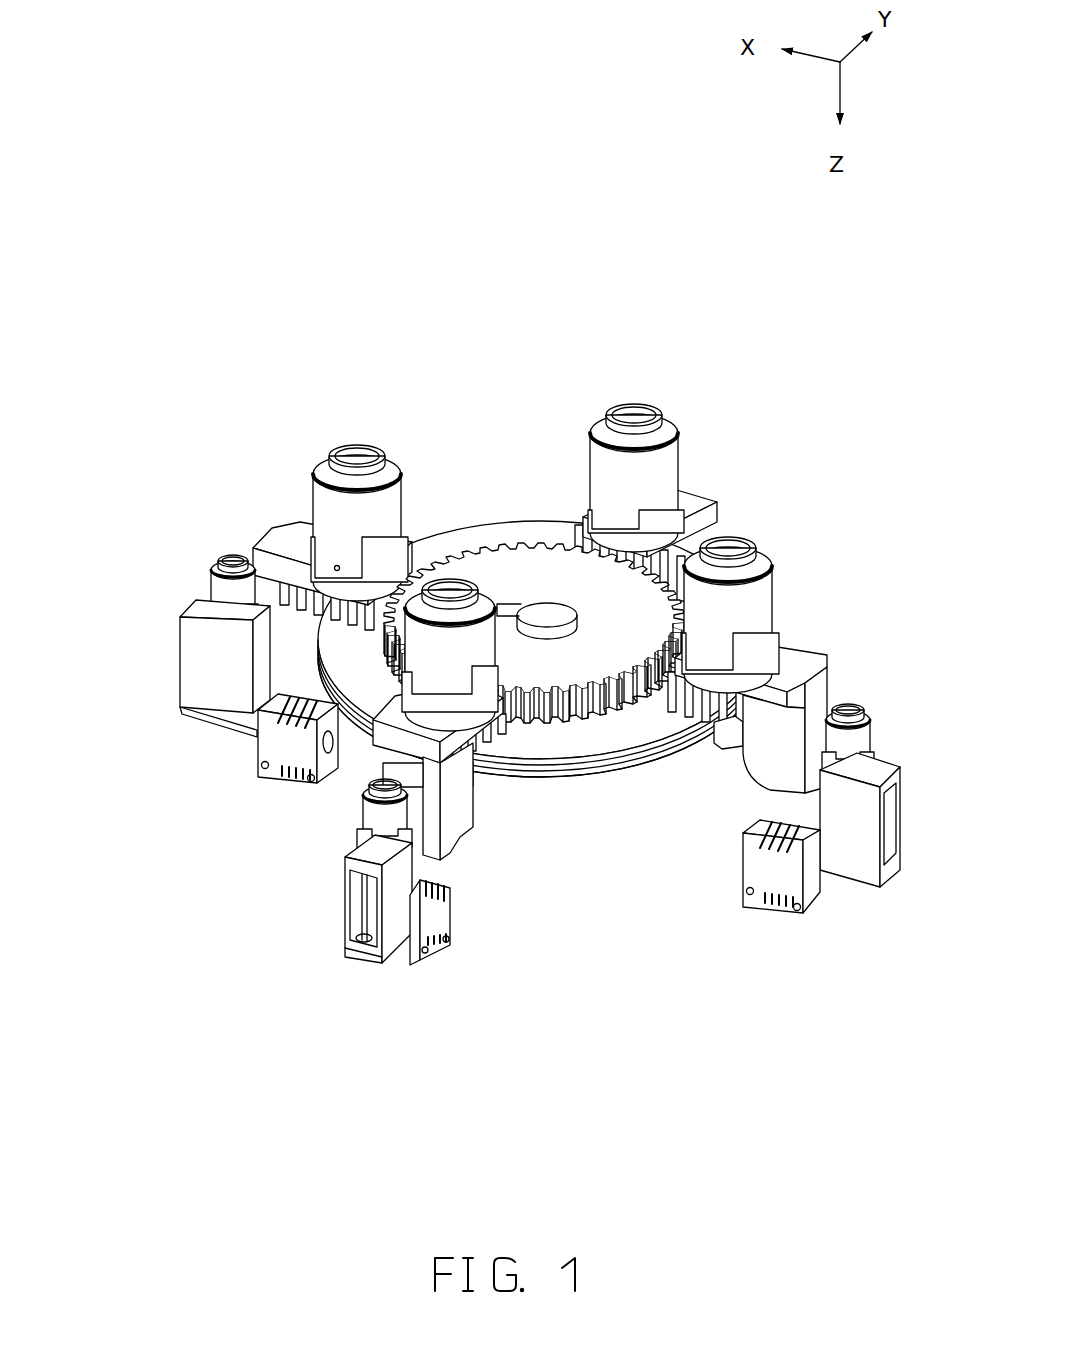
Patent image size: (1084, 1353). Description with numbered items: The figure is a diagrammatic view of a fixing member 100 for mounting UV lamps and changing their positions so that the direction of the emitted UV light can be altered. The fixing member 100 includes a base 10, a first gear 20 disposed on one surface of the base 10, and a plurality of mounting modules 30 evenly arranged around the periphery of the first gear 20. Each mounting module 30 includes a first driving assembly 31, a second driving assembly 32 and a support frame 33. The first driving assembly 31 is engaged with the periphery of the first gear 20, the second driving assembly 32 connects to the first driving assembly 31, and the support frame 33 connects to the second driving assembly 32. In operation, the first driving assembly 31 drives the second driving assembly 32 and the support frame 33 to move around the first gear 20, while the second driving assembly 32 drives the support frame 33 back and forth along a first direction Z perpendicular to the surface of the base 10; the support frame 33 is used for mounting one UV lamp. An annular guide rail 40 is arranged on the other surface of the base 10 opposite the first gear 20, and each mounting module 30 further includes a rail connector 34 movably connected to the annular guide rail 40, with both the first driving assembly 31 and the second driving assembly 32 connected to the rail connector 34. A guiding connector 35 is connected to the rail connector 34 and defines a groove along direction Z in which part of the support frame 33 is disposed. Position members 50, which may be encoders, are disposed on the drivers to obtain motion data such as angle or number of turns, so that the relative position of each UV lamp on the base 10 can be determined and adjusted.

The fixing member 100 is at (522, 380).
The base 10 is at (632, 727).
The first gear 20 is at (513, 565).
The mounting module 30 is at (189, 446).
The first driving assembly 31 is at (321, 506).
The second driving assembly 32 is at (216, 590).
The support frame 33 is at (273, 749).
The rail connector 34 is at (267, 590).
The guiding connector 35 is at (213, 686).
The annular guide rail 40 is at (546, 778).
The position member 50 is at (732, 548).